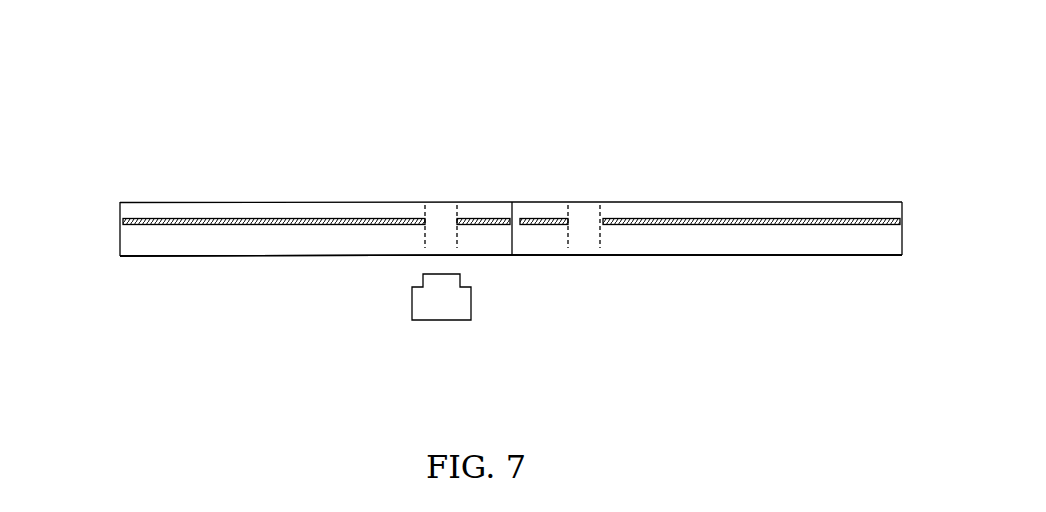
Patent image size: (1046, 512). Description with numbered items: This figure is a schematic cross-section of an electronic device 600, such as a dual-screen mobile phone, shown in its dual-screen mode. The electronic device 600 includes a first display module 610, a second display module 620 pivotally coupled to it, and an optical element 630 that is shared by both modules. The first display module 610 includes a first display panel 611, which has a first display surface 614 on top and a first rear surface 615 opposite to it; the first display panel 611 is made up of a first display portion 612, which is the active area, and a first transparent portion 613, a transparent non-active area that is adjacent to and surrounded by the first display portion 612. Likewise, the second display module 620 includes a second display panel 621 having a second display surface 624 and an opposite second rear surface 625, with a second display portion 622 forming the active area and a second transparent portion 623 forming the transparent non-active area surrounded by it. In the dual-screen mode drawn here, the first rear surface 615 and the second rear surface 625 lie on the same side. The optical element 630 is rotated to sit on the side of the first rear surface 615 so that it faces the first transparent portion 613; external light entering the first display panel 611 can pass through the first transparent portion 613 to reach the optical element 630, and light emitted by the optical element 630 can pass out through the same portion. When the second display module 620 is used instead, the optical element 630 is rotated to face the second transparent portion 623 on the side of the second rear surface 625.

The electronic device 600 is at (482, 57).
The first display module 610 is at (122, 207).
The first display panel 611 is at (119, 257).
The first display portion 612 is at (177, 242).
The first transparent portion 613 is at (442, 237).
The first display surface 614 is at (282, 217).
The first rear surface 615 is at (313, 258).
The second display module 620 is at (882, 209).
The second display panel 621 is at (903, 256).
The second display portion 622 is at (723, 237).
The second transparent portion 623 is at (592, 243).
The second display surface 624 is at (675, 217).
The second rear surface 625 is at (807, 258).
The optical element 630 is at (440, 309).